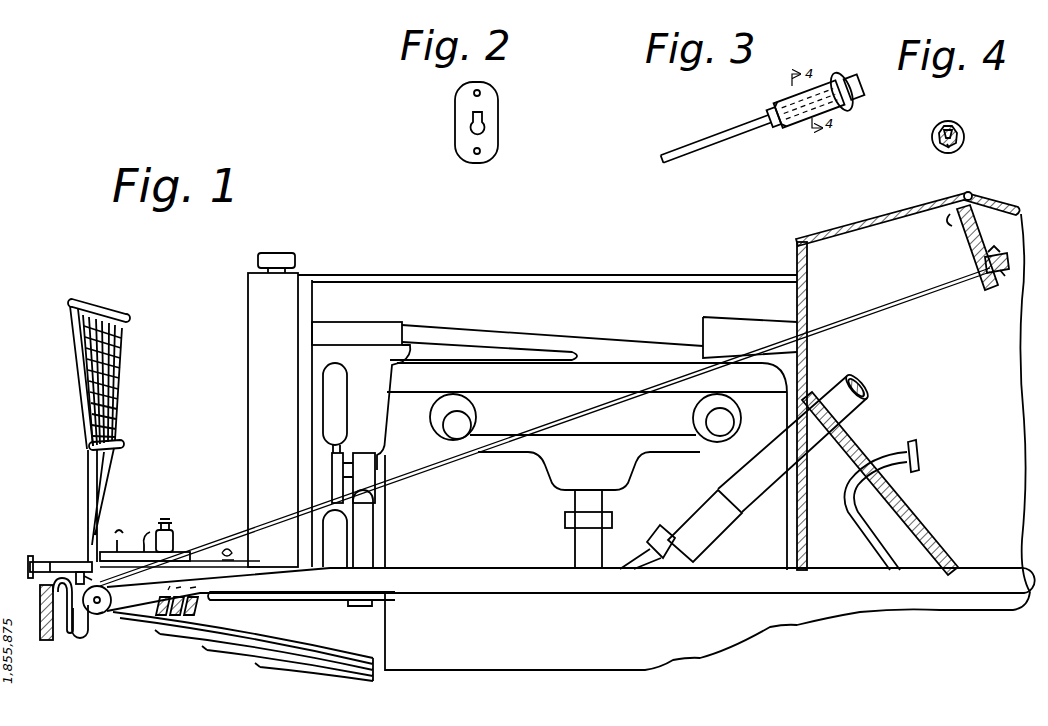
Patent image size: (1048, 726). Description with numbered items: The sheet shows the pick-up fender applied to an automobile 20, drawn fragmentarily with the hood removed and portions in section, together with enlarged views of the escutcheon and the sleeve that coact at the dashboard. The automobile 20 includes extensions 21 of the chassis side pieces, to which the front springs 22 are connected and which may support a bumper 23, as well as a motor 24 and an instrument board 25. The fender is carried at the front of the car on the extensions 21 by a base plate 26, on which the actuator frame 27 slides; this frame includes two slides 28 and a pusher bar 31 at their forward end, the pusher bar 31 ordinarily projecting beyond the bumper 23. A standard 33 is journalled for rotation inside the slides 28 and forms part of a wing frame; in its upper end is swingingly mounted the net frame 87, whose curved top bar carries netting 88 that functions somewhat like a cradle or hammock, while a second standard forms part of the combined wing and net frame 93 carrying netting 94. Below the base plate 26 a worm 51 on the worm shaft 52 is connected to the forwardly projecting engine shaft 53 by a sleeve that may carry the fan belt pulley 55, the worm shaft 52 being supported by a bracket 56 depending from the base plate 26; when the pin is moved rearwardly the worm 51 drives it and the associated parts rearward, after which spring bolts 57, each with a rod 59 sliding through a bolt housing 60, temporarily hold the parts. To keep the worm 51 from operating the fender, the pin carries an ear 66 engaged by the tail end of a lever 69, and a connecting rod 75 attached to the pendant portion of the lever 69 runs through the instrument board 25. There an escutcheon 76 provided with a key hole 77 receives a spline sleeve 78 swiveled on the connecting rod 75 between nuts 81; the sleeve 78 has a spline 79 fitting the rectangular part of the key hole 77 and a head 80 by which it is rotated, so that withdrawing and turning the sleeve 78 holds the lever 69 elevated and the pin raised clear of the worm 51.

In FIG. 1, the automobile 20 is at (874, 618).
In FIG. 1, the extensions of the chassis side pieces 21 is at (118, 608).
In FIG. 1, the front springs 22 is at (340, 673).
In FIG. 1, the bumper 23 is at (46, 640).
In FIG. 1, the motor 24 is at (486, 542).
In FIG. 1, the instrument board 25 is at (948, 208).
In FIG. 1, the base plate 26 is at (110, 612).
In FIG. 1, the actuator frame 27 is at (52, 560).
In FIG. 1, the slides 28 is at (45, 560).
In FIG. 1, the pusher bar 31 is at (29, 560).
In FIG. 1, the standard 33 is at (86, 481).
In FIG. 1, the worm 51 is at (196, 612).
In FIG. 1, the worm shaft 52 is at (303, 608).
In FIG. 1, the engine shaft 53 is at (385, 605).
In FIG. 1, the fan belt pulley 55 is at (365, 612).
In FIG. 1, the bracket 56 is at (80, 636).
In FIG. 1, the spring bolts 57 is at (116, 535).
In FIG. 1, the rod 59 is at (168, 520).
In FIG. 1, the bolt housing 60 is at (174, 535).
In FIG. 1, the ear 66 is at (149, 530).
In FIG. 1, the lever 69 is at (78, 572).
In FIG. 1, the connecting rod 75 is at (922, 295).
In FIG. 3, the connecting rod 75 is at (693, 153).
In FIG. 4, the connecting rod 75 is at (960, 130).
In FIG. 1, the escutcheon 76 is at (995, 290).
In FIG. 2, the escutcheon 76 is at (455, 130).
In FIG. 2, the key hole 77 is at (498, 127).
In FIG. 1, the spline sleeve 78 is at (984, 274).
In FIG. 3, the spline sleeve 78 is at (783, 124).
In FIG. 4, the spline sleeve 78 is at (936, 142).
In FIG. 3, the spline 79 is at (782, 106).
In FIG. 4, the spline 79 is at (942, 130).
In FIG. 1, the head 80 is at (1002, 256).
In FIG. 3, the head 80 is at (843, 77).
In FIG. 4, the head 80 is at (964, 147).
In FIG. 3, the nuts 81 is at (771, 124).
In FIG. 1, the net frame 87 is at (130, 305).
In FIG. 1, the netting 88 is at (118, 353).
In FIG. 1, the combined wing and net frame 93 is at (100, 368).
In FIG. 1, the netting 94 is at (122, 433).